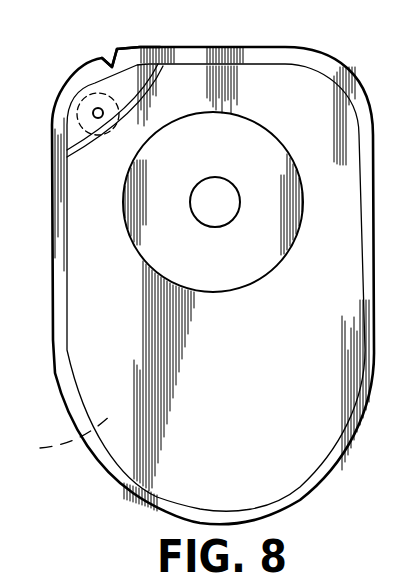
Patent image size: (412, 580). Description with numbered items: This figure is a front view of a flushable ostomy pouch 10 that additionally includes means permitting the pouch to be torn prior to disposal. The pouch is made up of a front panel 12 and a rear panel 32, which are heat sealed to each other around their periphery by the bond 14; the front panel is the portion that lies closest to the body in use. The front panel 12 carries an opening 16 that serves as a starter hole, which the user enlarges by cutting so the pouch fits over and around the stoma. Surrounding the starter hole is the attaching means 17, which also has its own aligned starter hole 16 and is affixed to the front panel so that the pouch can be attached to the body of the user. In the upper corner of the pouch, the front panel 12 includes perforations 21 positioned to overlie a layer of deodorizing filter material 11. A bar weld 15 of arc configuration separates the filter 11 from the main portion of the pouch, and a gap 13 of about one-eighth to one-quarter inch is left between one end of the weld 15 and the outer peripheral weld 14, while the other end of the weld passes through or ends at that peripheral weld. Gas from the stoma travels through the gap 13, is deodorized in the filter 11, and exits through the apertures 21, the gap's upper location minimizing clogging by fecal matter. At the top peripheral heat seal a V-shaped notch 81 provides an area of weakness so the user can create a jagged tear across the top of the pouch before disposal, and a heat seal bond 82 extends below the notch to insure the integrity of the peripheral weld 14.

The flushable ostomy pouch 10 is at (92, 482).
The front panel 12 is at (255, 465).
The bond 14 is at (340, 462).
The attaching means 17 is at (244, 272).
The opening 16 is at (223, 190).
The bar weld 15 is at (97, 150).
The gap 13 is at (157, 68).
The deodorizing filter material 11 is at (85, 98).
The perforations 21 is at (99, 113).
The rear panel 32 is at (64, 439).
The V-shaped notch 81 is at (112, 62).
The heat seal bond 82 is at (142, 48).